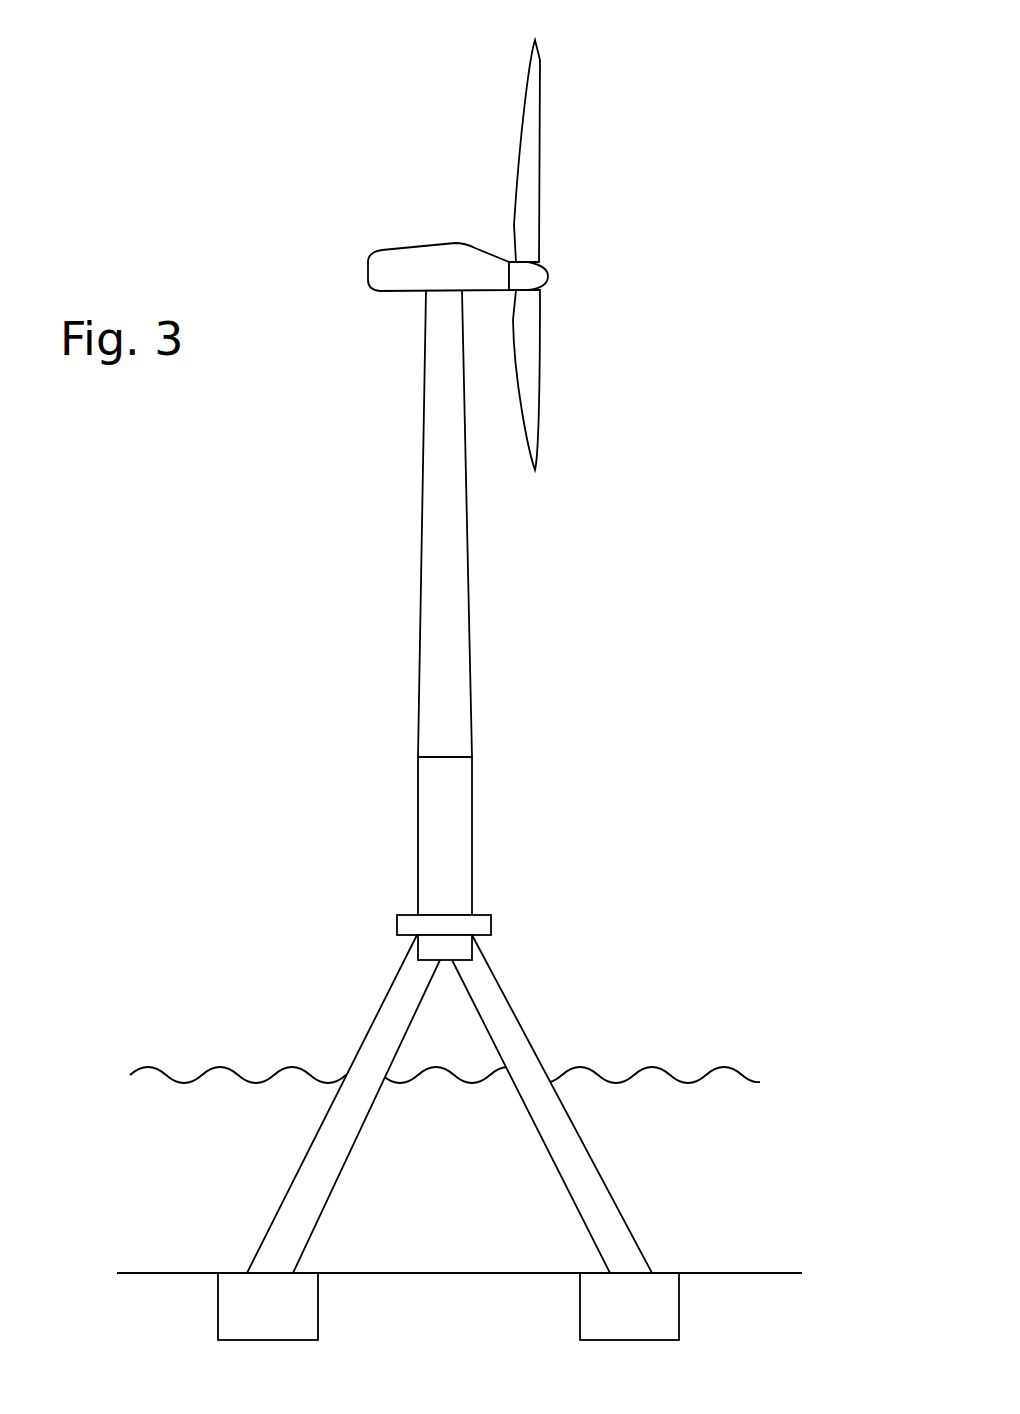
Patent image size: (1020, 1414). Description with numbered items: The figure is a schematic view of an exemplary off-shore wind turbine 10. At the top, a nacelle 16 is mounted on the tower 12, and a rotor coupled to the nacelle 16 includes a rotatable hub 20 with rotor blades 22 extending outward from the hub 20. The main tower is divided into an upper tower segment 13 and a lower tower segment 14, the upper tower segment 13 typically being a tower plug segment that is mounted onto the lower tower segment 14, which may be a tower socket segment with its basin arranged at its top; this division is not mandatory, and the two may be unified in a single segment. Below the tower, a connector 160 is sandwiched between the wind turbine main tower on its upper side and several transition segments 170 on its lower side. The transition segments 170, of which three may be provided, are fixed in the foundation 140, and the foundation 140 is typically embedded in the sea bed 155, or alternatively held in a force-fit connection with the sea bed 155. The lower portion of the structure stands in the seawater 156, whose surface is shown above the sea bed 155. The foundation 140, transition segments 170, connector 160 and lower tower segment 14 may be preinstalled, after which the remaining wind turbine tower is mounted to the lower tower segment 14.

The wind turbine 10 is at (258, 78).
The tower 12 is at (398, 603).
The upper tower segment 13 is at (459, 728).
The lower tower segment 14 is at (459, 856).
The nacelle 16 is at (367, 270).
The hub 20 is at (549, 277).
The rotor blade 22 is at (541, 141).
The foundation 140 is at (246, 1317).
The sea bed 155 is at (472, 1328).
The seawater 156 is at (760, 1163).
The connector 160 is at (491, 927).
The transition segment 170 is at (397, 978).